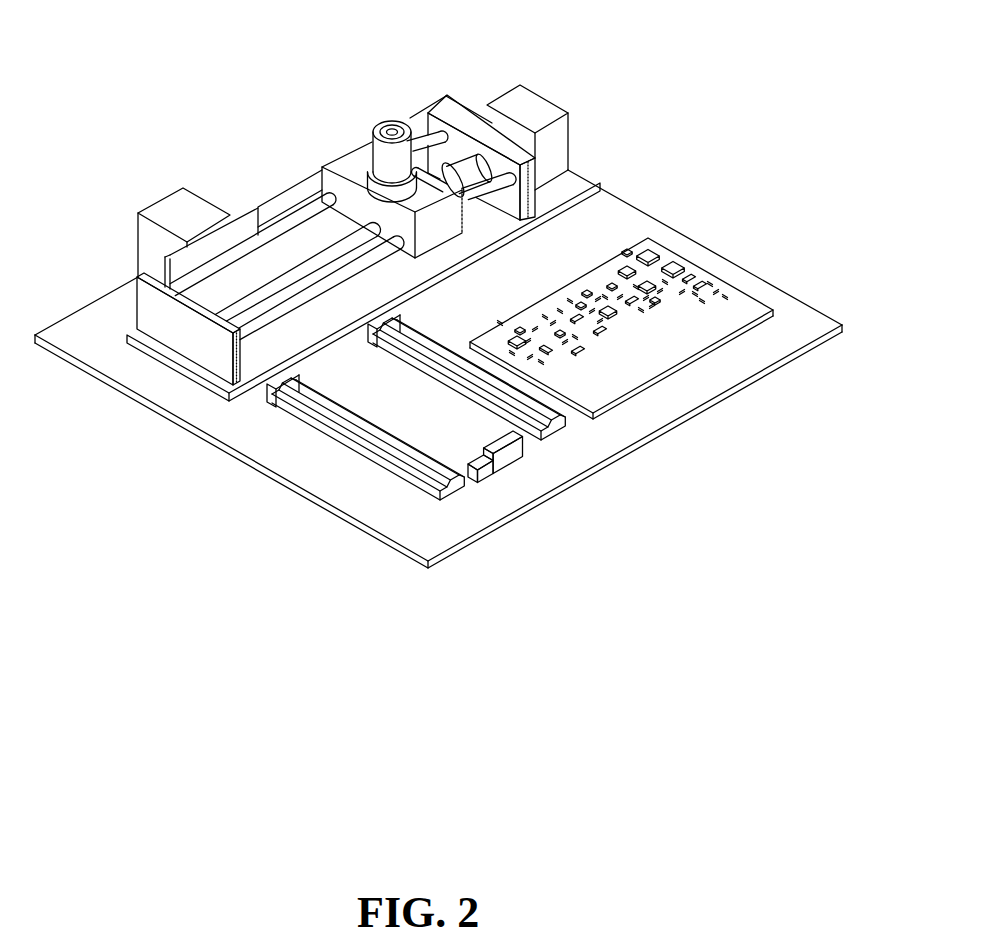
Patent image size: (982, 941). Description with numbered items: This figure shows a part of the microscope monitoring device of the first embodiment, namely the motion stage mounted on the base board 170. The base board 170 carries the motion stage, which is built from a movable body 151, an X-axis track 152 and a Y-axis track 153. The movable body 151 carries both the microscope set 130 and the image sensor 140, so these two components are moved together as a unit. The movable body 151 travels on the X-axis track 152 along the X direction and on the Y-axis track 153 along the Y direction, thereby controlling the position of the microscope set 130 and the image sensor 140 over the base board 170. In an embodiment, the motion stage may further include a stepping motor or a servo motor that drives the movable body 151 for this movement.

The microscope set 130 is at (391, 128).
The image sensor 140 is at (377, 181).
The movable body 151 is at (327, 187).
The X-axis track 152 is at (347, 447).
The Y-axis track 153 is at (148, 313).
The base board 170 is at (798, 317).